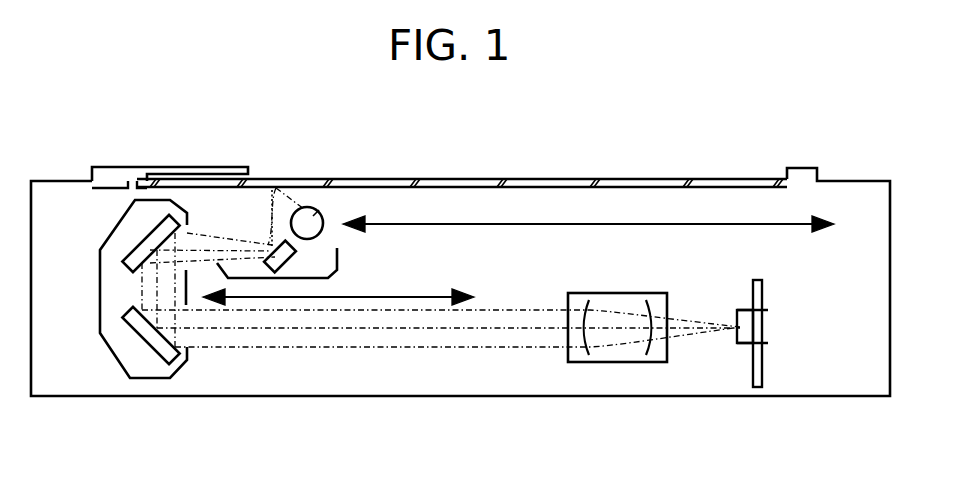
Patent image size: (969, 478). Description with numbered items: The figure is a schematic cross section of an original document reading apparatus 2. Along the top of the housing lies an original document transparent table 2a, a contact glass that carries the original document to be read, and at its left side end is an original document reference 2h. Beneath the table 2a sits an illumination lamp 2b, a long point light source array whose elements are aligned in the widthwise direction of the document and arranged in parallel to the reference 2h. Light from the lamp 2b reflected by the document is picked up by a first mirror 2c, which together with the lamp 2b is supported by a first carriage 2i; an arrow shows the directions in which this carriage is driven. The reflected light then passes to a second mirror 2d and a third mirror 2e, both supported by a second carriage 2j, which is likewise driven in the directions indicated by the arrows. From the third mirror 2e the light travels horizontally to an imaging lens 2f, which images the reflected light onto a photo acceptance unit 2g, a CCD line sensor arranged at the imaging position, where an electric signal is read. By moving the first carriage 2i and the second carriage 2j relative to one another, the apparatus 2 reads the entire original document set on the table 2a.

The original document reading apparatus 2 is at (840, 396).
The original document transparent table 2a is at (638, 178).
The illumination lamp 2b is at (324, 223).
The first mirror 2c is at (290, 266).
The second mirror 2d is at (142, 238).
The third mirror 2e is at (143, 338).
The imaging lens 2f is at (614, 293).
The photo acceptance unit 2g is at (744, 310).
The original document reference 2h is at (238, 167).
The first carriage 2i is at (337, 274).
The second carriage 2j is at (150, 380).